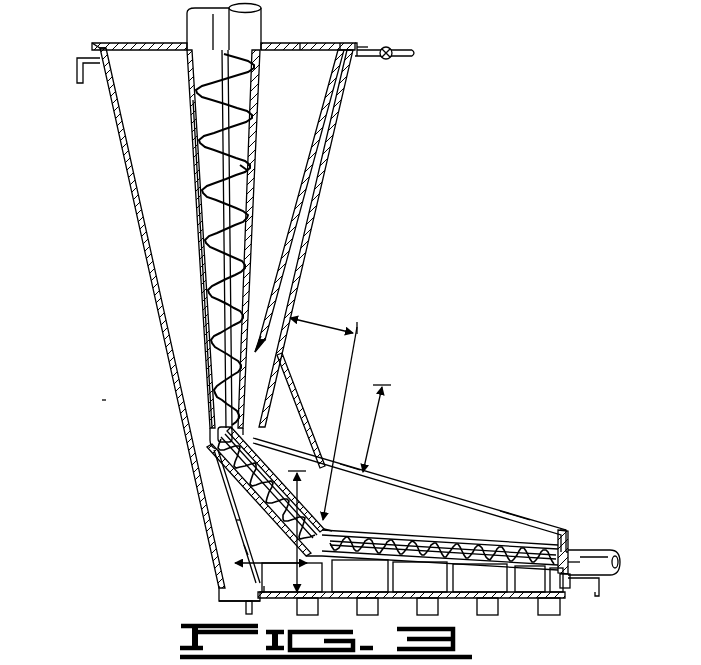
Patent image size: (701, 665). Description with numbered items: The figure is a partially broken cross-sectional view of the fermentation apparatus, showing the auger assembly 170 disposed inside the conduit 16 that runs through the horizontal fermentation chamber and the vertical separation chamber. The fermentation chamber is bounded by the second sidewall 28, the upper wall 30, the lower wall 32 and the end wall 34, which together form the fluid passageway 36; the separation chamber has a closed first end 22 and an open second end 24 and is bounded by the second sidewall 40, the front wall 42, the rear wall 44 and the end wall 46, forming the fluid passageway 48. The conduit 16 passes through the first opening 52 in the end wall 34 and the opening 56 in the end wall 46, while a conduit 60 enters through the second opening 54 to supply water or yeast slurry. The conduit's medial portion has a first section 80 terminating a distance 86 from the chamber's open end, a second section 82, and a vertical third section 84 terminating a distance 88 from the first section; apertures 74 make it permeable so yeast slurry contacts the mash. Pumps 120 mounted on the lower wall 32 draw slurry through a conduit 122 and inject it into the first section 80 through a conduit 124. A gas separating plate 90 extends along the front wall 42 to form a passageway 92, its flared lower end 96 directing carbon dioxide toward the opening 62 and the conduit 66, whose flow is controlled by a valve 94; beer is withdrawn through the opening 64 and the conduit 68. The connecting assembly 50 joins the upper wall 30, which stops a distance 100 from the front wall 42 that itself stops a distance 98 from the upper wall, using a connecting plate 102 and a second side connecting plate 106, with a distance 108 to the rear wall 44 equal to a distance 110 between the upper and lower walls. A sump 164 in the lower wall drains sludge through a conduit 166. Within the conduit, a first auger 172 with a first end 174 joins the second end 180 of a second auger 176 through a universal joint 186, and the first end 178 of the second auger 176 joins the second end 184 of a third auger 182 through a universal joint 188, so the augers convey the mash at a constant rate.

The conduit 16 is at (614, 548).
The closed first end 22 is at (335, 45).
The open second end 24 is at (222, 540).
The second sidewall 28 is at (458, 531).
The upper wall 30 is at (513, 518).
The lower wall 32 is at (263, 594).
The end wall 34 is at (578, 543).
The fluid passageway 36 is at (386, 486).
The second sidewall 40 is at (168, 147).
The front wall 42 is at (330, 173).
The rear wall 44 is at (122, 182).
The end wall 46 is at (303, 55).
The fluid passageway 48 is at (167, 222).
The connecting assembly 50 is at (313, 414).
The first opening 52 is at (590, 553).
The second opening 54 is at (568, 590).
The opening 56 is at (256, 34).
The conduit 60 is at (602, 587).
The opening 62 is at (362, 57).
The opening 64 is at (104, 60).
The conduit 66 is at (381, 44).
The conduit 68 is at (75, 70).
The apertures 74 is at (198, 420).
The first section 80 is at (570, 547).
The second section 82 is at (284, 508).
The third section 84 is at (257, 108).
The distance 86 is at (226, 578).
The distance 88 is at (365, 481).
The gas separating plate 90 is at (327, 126).
The passageway 92 is at (320, 202).
The valve 94 is at (394, 46).
The lower end 96 is at (280, 310).
The distance 98 is at (373, 428).
The distance 100 is at (324, 326).
The connecting plate 102 is at (292, 358).
The second side connecting plate 106 is at (288, 398).
The distance 108 is at (222, 432).
The distance 110 is at (360, 576).
The pumps 120 is at (497, 614).
The conduit 122 is at (411, 599).
The conduit 124 is at (500, 581).
The sump 164 is at (232, 604).
The conduit 166 is at (245, 612).
The auger assembly 170 is at (246, 167).
The first auger 172 is at (552, 537).
The first end 174 is at (372, 534).
The second auger 176 is at (243, 528).
The first end 178 is at (235, 515).
The second end 180 is at (297, 550).
The third auger 182 is at (234, 130).
The second end 184 is at (207, 370).
The universal joint 186 is at (326, 528).
The universal joint 188 is at (236, 460).